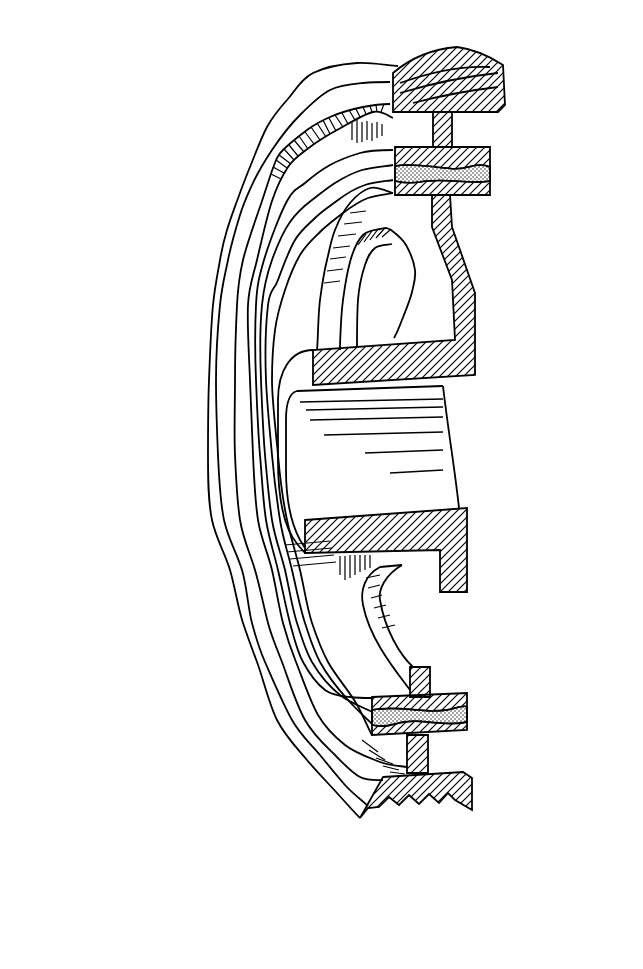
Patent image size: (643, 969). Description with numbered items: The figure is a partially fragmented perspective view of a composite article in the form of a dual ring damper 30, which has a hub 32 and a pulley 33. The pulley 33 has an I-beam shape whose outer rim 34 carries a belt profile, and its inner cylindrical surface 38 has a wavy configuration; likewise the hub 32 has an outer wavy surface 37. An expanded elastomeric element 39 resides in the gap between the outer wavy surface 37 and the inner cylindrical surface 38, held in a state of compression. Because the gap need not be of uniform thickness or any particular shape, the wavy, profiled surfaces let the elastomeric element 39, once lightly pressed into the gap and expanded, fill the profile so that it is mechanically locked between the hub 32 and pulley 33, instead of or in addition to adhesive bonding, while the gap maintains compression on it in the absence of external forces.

The dual ring damper 30 is at (196, 444).
The hub 32 is at (522, 262).
The pulley 33 is at (248, 112).
The outer rim 34 is at (505, 89).
The outer wavy surface 37 is at (478, 190).
The inner cylindrical surface 38 is at (478, 147).
The expanded elastomeric element 39 is at (372, 716).